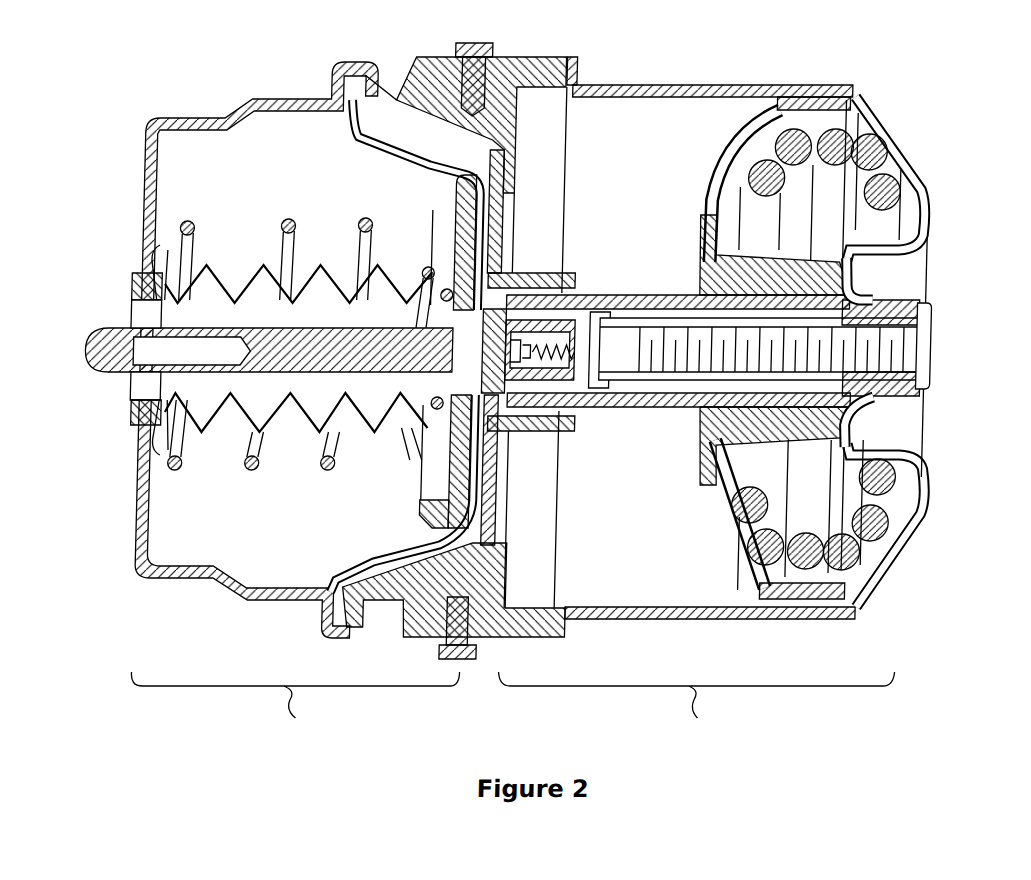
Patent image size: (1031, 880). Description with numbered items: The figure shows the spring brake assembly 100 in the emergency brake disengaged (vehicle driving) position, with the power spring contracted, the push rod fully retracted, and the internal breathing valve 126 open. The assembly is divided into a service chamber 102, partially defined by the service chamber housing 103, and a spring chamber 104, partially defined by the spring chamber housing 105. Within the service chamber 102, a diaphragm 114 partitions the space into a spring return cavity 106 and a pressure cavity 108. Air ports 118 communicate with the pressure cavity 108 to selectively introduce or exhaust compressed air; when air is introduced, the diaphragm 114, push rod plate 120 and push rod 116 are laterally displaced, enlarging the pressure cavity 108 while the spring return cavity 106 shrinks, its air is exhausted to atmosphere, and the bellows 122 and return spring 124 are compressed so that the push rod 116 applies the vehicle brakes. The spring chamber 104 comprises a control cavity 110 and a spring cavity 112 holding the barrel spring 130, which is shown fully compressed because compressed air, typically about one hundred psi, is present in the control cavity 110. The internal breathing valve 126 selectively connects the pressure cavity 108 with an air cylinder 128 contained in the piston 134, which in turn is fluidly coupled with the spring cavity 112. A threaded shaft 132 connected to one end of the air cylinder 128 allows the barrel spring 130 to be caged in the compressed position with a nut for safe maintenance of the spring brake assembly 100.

The spring brake assembly 100 is at (754, 25).
The service chamber 102 is at (295, 711).
The service chamber housing 103 is at (259, 100).
The spring chamber 104 is at (696, 708).
The spring chamber housing 105 is at (924, 168).
The spring return cavity 106 is at (257, 189).
The pressure cavity 108 is at (402, 130).
The control cavity 110 is at (657, 207).
The spring cavity 112 is at (827, 204).
The diaphragm 114 is at (395, 548).
The push rod 116 is at (103, 374).
The air ports 118 is at (495, 52).
The push rod plate 120 is at (458, 210).
The bellows 122 is at (231, 268).
The return spring 124 is at (301, 243).
The internal breathing valve 126 is at (593, 303).
The air cylinder 128 is at (663, 322).
The barrel spring 130 is at (907, 491).
The shaft 132 is at (915, 350).
The piston 134 is at (658, 408).